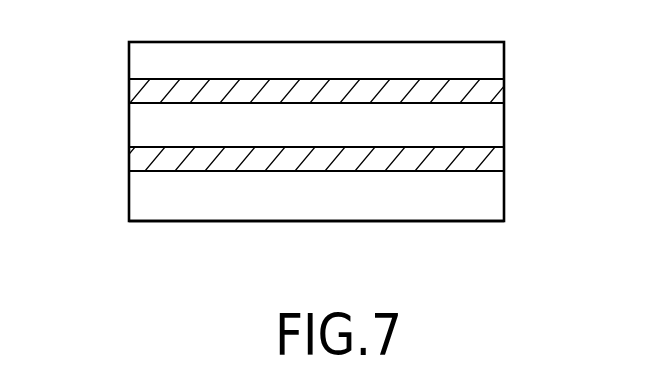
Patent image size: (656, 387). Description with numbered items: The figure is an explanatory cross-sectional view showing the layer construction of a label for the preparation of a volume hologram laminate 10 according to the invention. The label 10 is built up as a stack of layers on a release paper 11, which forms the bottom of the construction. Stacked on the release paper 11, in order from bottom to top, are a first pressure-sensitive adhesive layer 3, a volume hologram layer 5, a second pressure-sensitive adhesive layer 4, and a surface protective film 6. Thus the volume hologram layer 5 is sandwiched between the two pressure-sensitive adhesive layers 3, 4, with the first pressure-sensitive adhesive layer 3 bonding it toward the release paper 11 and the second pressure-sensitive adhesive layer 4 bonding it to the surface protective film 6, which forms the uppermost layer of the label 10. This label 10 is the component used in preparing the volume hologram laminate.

The label for the preparation of a volume hologram laminate 10 is at (307, 126).
The surface protective film 6 is at (499, 57).
The second pressure-sensitive adhesive layer 4 is at (499, 90).
The volume hologram layer 5 is at (497, 128).
The first pressure-sensitive adhesive layer 3 is at (497, 165).
The release paper 11 is at (497, 203).